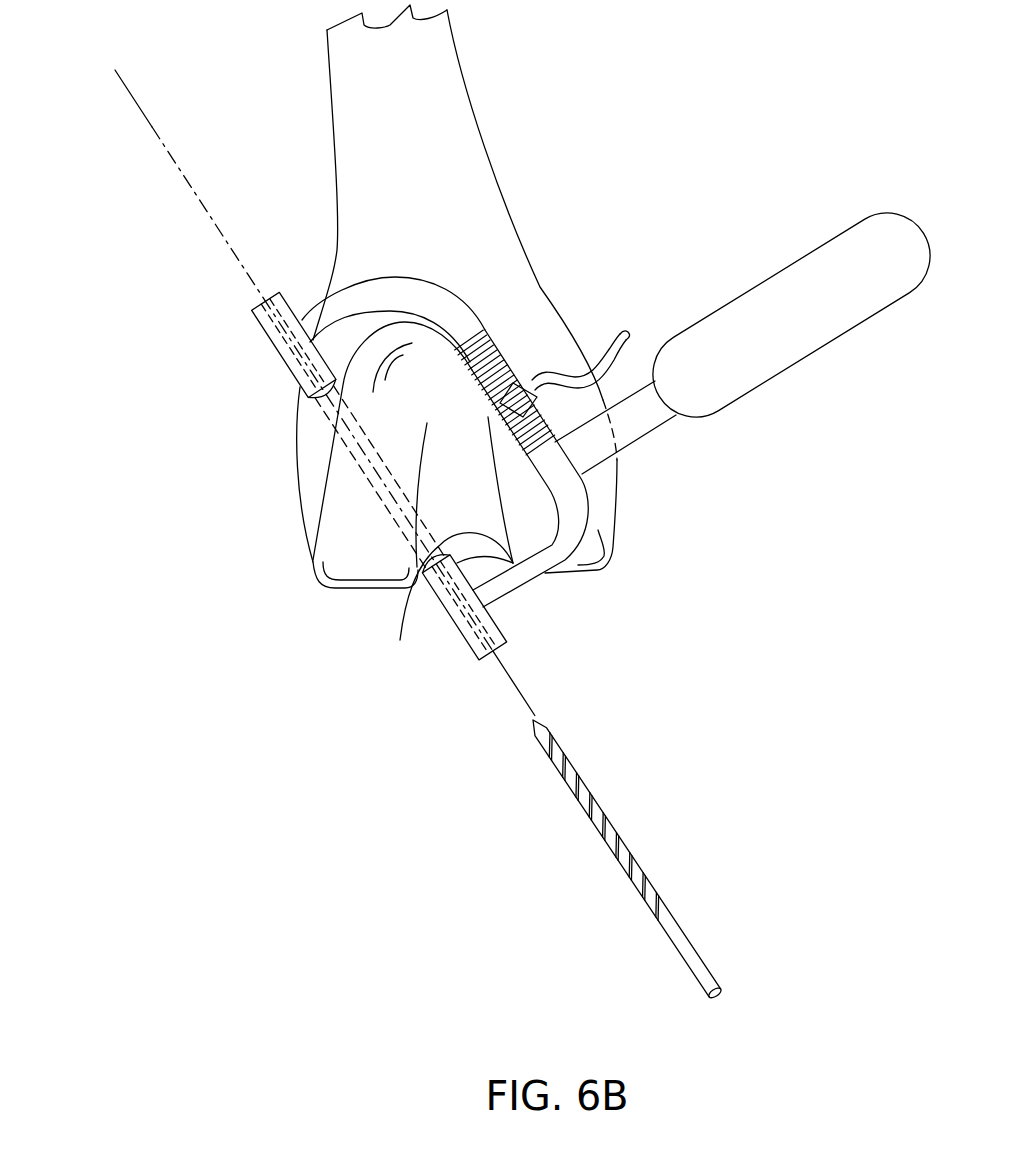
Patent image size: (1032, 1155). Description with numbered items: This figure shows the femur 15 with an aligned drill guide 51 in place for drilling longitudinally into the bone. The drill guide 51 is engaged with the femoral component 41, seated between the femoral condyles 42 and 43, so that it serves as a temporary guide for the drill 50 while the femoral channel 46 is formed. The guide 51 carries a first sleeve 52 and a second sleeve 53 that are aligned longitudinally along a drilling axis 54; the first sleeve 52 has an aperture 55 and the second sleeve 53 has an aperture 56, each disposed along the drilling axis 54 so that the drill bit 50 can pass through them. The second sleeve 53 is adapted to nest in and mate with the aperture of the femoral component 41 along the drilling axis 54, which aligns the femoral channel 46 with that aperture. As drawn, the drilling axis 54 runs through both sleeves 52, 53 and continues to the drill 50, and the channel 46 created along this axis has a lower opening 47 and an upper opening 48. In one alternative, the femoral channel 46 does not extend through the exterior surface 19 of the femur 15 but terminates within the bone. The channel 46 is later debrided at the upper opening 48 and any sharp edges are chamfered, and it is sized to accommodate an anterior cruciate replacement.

The femur 15 is at (455, 133).
The exterior surface of the femur 19 is at (345, 258).
The femoral component 41 is at (330, 470).
The femoral condyle 42 is at (575, 560).
The femoral condyle 43 is at (345, 572).
The femoral channel 46 is at (366, 490).
The lower opening 47 is at (437, 578).
The upper opening 48 is at (305, 386).
The drill 50 is at (705, 1040).
The drill guide 51 is at (682, 450).
The first sleeve 52 is at (252, 308).
The second sleeve 53 is at (490, 662).
The drilling axis 54 is at (183, 178).
The aperture 55 is at (275, 340).
The aperture 56 is at (462, 642).